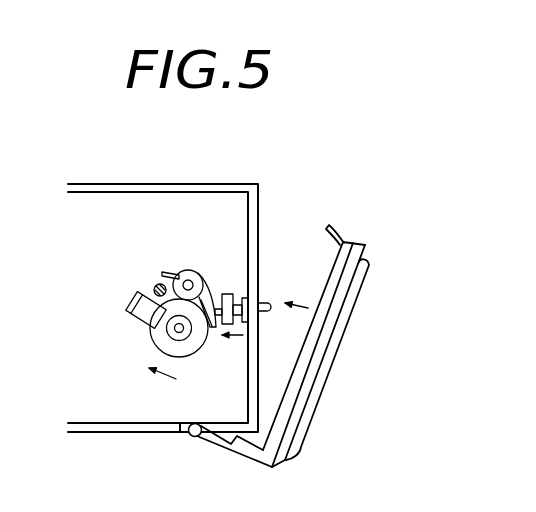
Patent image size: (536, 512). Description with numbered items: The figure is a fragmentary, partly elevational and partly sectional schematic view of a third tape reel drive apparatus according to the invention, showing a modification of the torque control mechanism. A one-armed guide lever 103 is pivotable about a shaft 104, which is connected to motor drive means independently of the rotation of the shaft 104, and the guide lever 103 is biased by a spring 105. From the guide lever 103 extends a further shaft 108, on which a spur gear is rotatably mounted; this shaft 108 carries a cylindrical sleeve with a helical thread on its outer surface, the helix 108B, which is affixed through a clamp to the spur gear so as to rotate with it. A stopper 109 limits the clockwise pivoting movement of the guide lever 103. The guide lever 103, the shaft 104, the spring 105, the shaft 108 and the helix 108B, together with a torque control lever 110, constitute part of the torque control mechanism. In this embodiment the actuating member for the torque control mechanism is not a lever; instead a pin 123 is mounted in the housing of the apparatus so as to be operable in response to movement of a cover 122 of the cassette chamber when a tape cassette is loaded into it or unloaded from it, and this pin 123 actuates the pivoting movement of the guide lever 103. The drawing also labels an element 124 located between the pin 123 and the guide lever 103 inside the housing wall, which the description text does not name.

The guide lever 103 is at (217, 278).
The shaft 104 is at (174, 259).
The spring 105 is at (137, 254).
The shaft 108 is at (135, 342).
The helix 108B is at (191, 350).
The stopper 109 is at (117, 276).
The torque control lever 110 is at (122, 310).
The cover 122 is at (305, 339).
The pin 123 is at (288, 287).
The switch actuator 124 is at (261, 275).